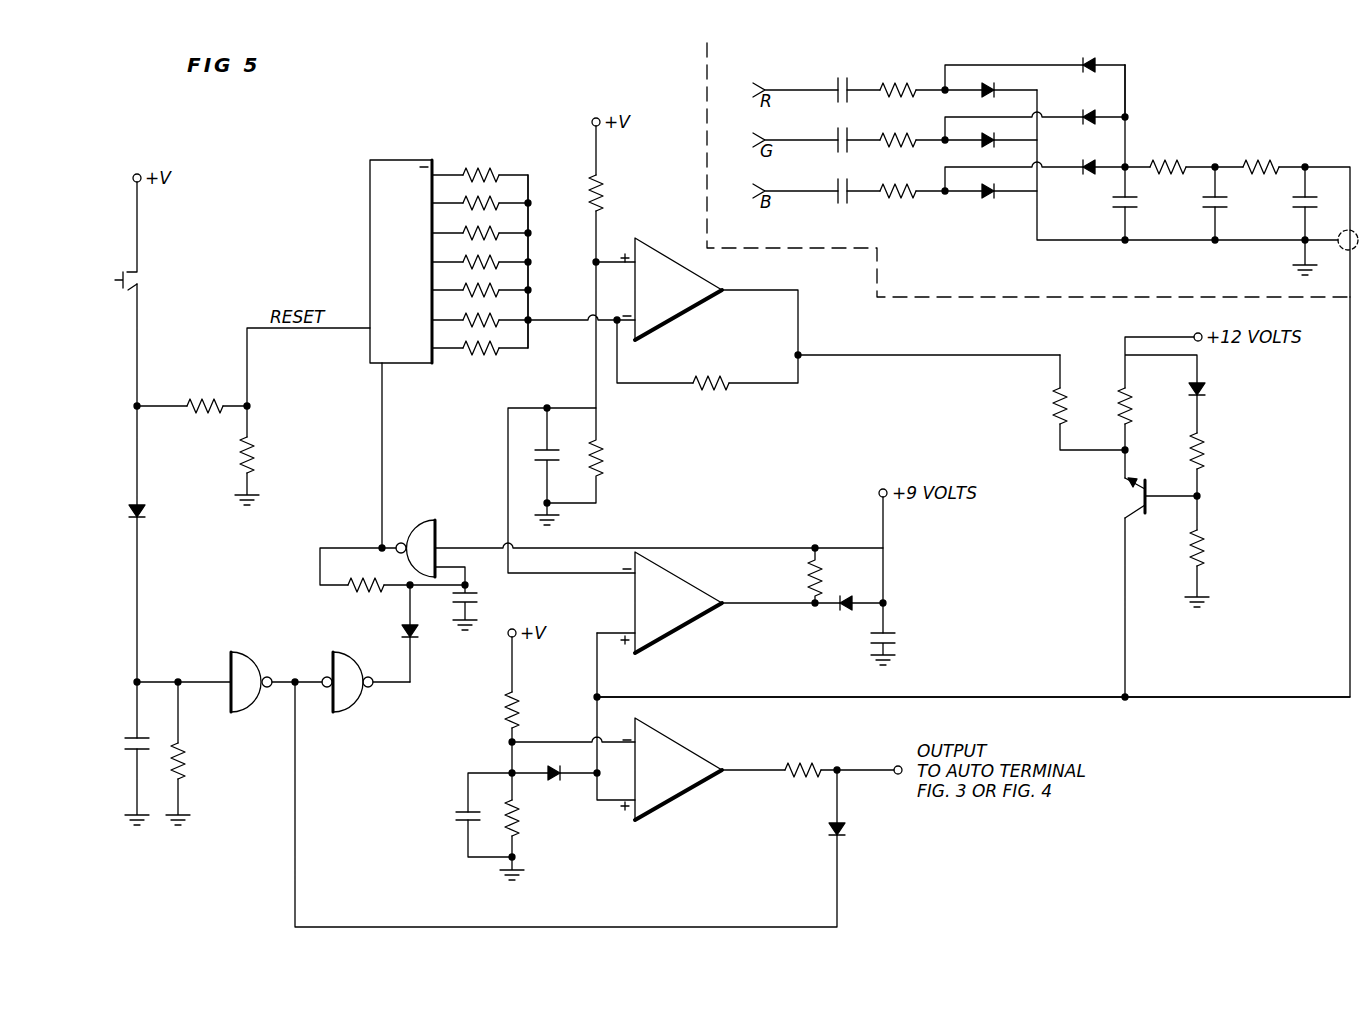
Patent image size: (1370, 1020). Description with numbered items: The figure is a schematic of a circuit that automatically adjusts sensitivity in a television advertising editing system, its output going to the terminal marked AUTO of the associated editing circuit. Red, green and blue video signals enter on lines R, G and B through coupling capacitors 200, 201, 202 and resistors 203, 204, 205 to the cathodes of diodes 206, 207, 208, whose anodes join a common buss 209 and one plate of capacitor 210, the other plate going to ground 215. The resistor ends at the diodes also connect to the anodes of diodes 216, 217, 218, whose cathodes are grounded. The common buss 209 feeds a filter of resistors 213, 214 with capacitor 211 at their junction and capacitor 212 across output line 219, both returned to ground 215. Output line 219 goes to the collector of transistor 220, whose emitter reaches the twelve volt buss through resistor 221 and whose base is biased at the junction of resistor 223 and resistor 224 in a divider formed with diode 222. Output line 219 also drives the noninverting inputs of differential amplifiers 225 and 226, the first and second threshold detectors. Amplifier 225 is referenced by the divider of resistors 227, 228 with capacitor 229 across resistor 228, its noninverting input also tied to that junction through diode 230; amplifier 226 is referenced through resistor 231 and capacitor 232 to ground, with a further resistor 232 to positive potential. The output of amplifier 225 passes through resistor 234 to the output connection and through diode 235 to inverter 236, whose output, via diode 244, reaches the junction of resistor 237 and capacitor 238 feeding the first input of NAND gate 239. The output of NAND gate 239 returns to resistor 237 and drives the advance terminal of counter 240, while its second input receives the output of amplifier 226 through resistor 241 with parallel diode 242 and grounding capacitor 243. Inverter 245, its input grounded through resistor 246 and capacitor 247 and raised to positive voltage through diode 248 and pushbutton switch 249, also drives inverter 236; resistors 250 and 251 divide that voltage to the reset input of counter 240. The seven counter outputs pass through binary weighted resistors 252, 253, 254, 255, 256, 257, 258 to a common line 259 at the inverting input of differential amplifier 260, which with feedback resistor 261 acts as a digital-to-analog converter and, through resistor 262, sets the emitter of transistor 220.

The coupling capacitor 200 is at (832, 78).
The coupling capacitor 201 is at (836, 133).
The coupling capacitor 202 is at (836, 185).
The resistor 203 is at (900, 82).
The resistor 204 is at (884, 148).
The resistor 205 is at (893, 200).
The diode 206 is at (1088, 62).
The diode 207 is at (1093, 117).
The diode 208 is at (1093, 167).
The common buss 209 is at (1128, 68).
The capacitor 210 is at (1118, 207).
The capacitor 211 is at (1208, 207).
The capacitor 212 is at (1298, 207).
The resistor 213 is at (1185, 165).
The resistor 214 is at (1268, 165).
The ground 215 is at (1300, 265).
The diode 216 is at (982, 92).
The diode 217 is at (982, 142).
The diode 218 is at (988, 200).
The output line 219 is at (1350, 548).
The transistor 220 is at (1125, 498).
The resistor 221 is at (1135, 405).
The diode 222 is at (1205, 390).
The resistor 223 is at (1210, 445).
The resistor 224 is at (1210, 538).
The differential amplifier 225 is at (688, 745).
The differential amplifier 226 is at (690, 590).
The resistor 227 is at (500, 710).
The resistor 228 is at (520, 820).
The capacitor 229 is at (462, 820).
The diode 230 is at (555, 783).
The resistor 231 is at (604, 455).
The capacitor and series resistor 232 is at (600, 185).
The resistor 234 is at (788, 765).
The diode 235 is at (829, 830).
The inverter 236 is at (352, 712).
The resistor 237 is at (348, 598).
The capacitor 238 is at (480, 600).
The NAND gate 239 is at (415, 525).
The counter 240 is at (422, 158).
The resistor 241 is at (818, 555).
The diode 242 is at (860, 598).
The capacitor 243 is at (893, 630).
The diode 244 is at (402, 631).
The inverter 245 is at (245, 650).
The resistor 246 is at (186, 762).
The capacitor 247 is at (125, 740).
The diode 248 is at (127, 525).
The pushbutton switch 249 is at (130, 300).
The resistor 250 is at (220, 410).
The resistor 251 is at (255, 445).
The resistor 252 is at (500, 170).
The resistor 253 is at (500, 203).
The resistor 254 is at (500, 233).
The resistor 255 is at (500, 262).
The resistor 256 is at (500, 290).
The resistor 257 is at (500, 320).
The resistor 258 is at (500, 348).
The common line 259 is at (530, 238).
The differential amplifier 260 is at (695, 310).
The resistor 261 is at (718, 375).
The resistor 262 is at (1065, 388).